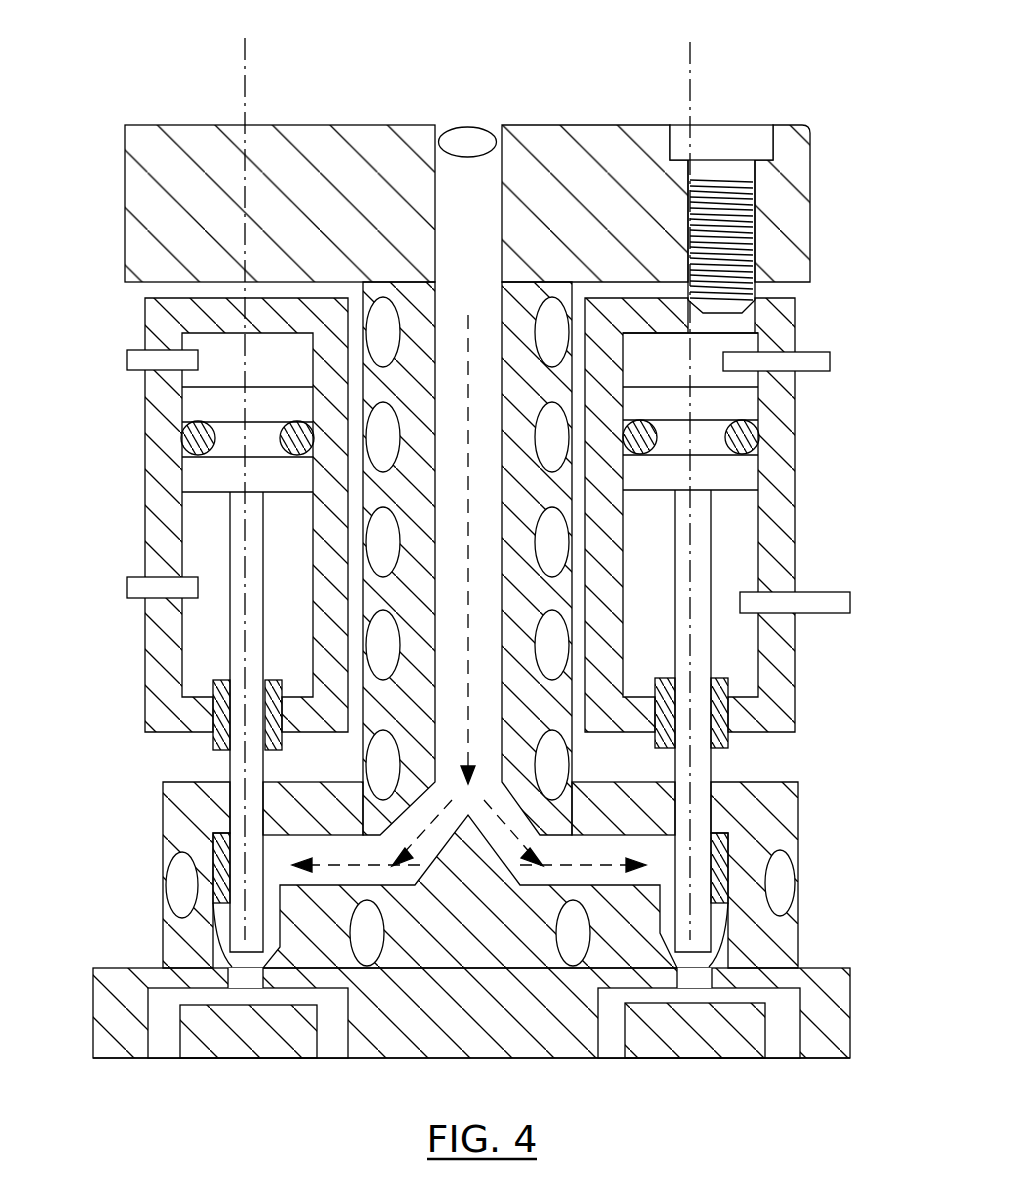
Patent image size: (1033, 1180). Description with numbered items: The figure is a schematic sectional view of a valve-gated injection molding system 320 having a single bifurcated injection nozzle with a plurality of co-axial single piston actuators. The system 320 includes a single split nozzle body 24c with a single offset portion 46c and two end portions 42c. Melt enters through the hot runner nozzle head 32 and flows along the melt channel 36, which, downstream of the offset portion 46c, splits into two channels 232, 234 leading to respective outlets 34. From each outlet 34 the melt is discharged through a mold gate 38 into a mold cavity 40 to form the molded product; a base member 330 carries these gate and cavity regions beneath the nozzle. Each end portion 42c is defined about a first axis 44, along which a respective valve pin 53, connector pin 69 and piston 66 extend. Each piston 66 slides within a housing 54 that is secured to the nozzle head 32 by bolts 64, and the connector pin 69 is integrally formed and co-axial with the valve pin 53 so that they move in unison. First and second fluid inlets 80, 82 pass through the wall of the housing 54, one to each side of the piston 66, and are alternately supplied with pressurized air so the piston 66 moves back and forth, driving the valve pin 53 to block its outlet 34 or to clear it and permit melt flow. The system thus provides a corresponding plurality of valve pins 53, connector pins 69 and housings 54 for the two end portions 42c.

The valve-gated injection molding system 320 is at (183, 82).
The first axis 44 is at (248, 78).
The hot runner nozzle head 32 is at (367, 148).
The bolts 64 is at (742, 140).
The offset portion 46c is at (495, 320).
The melt channel 36 is at (490, 740).
The housing 54 is at (787, 428).
The first fluid inlet 80 is at (137, 357).
The second fluid inlet 82 is at (137, 585).
The first piston 66 is at (190, 398).
The connector pin 69 is at (235, 497).
The valve pin 53 is at (230, 758).
The first split channel 232 is at (325, 840).
The second split channel 234 is at (645, 840).
The split nozzle body 24c is at (822, 762).
The end portion 42c is at (225, 925).
The outlet 34 is at (240, 962).
The base plate 330 is at (105, 1017).
The mold gate 38 is at (243, 990).
The mold cavity 40 is at (330, 1040).